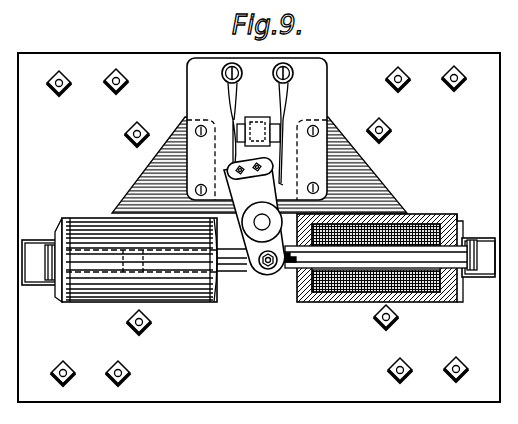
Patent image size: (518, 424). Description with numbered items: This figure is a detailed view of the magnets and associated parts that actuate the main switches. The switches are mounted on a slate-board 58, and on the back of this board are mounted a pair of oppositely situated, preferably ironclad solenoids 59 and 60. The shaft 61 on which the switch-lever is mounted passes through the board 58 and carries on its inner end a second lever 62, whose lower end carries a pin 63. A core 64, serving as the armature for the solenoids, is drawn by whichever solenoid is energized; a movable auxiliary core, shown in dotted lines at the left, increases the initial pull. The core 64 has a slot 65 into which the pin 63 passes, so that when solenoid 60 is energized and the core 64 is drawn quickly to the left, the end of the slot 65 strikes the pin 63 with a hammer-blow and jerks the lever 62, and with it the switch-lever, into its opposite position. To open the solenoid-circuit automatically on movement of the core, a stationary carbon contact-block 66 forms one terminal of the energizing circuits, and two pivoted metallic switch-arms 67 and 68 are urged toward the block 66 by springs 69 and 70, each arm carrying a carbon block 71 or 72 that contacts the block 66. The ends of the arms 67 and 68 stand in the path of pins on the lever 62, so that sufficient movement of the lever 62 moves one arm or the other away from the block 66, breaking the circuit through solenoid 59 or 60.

The slate-board 58 is at (259, 227).
The solenoid 59 is at (318, 300).
The solenoid 60 is at (177, 292).
The shaft 61 is at (262, 222).
The lever 62 is at (254, 216).
The pin 63 is at (268, 268).
The core 64 is at (240, 257).
The slot 65 is at (292, 262).
The stationary contact-block 66 is at (252, 118).
The switch-arm 67 is at (233, 115).
The switch-arm 68 is at (283, 110).
The spring 69 is at (230, 100).
The spring 70 is at (283, 90).
The carbon block 71 is at (234, 142).
The carbon block 72 is at (282, 122).